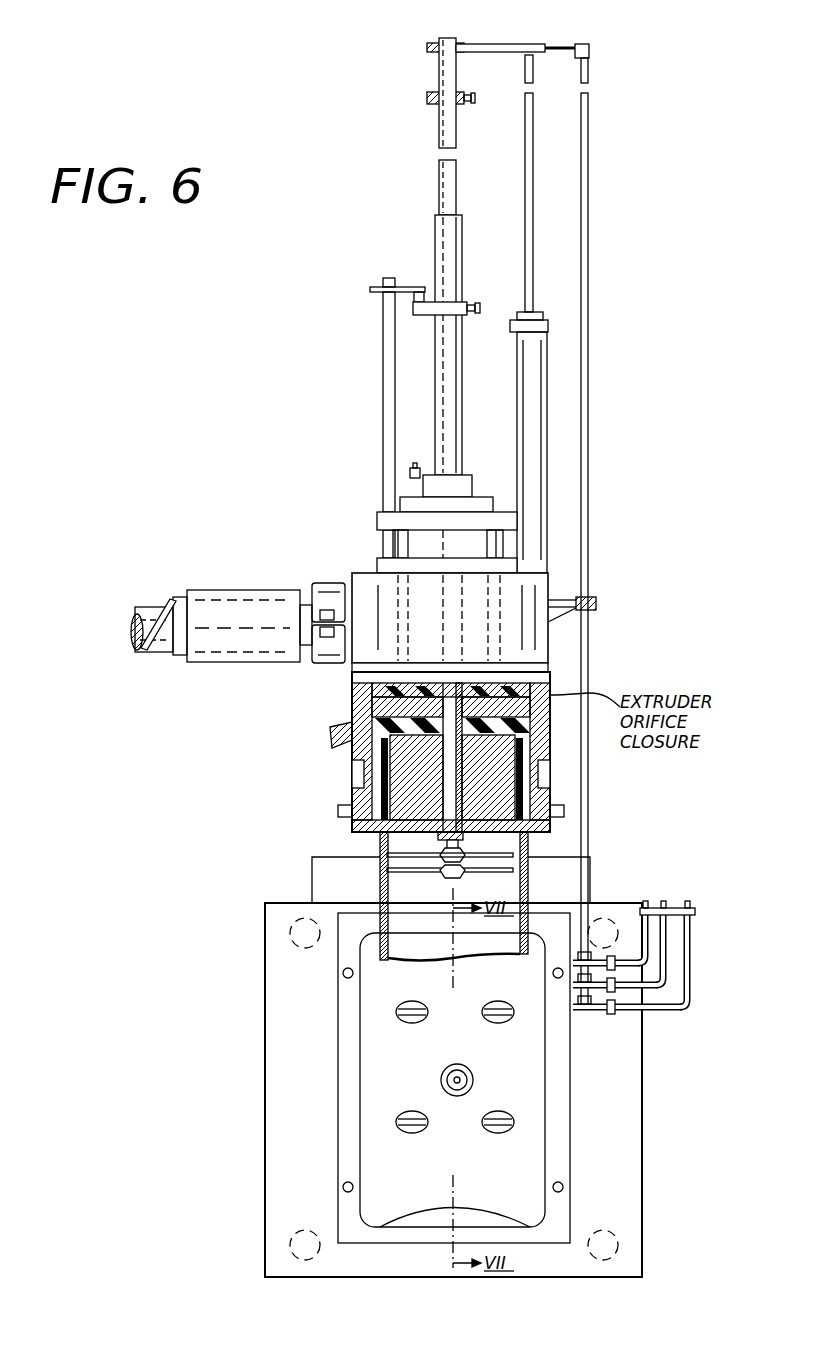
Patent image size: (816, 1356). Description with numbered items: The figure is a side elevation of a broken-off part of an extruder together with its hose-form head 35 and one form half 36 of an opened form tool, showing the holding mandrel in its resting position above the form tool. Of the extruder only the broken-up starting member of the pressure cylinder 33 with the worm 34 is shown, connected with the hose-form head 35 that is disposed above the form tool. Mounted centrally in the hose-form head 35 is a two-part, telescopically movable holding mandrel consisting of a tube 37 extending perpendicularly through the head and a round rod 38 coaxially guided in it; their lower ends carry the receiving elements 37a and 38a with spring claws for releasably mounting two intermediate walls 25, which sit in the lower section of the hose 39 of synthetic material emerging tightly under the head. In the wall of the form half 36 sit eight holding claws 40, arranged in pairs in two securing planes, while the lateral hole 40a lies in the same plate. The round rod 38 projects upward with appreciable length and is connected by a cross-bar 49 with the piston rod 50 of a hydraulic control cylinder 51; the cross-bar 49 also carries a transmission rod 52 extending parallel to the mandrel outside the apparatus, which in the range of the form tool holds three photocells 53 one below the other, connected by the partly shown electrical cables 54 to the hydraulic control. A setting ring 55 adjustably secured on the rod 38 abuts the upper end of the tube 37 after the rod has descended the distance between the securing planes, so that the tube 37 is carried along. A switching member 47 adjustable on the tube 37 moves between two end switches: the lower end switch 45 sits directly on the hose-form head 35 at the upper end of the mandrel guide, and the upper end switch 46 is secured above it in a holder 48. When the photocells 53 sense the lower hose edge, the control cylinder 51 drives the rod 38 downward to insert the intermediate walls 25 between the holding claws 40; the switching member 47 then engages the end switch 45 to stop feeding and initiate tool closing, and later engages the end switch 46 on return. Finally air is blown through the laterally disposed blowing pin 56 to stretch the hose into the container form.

The intermediate wall 25 is at (383, 870).
The pressure cylinder 33 is at (257, 612).
The worm 34 is at (160, 650).
The hose-form head 35 is at (352, 762).
The form half 36 is at (350, 1098).
The tube 37 is at (445, 423).
The receiving element 37a is at (440, 852).
The round rod 38 is at (447, 197).
The receiving element 38a is at (457, 877).
The hose 39 is at (380, 897).
The holding claw 40 is at (404, 1132).
The screw 40a is at (397, 1012).
The end switch 45 is at (415, 480).
The end switch 46 is at (412, 290).
The switching member 47 is at (427, 310).
The holder 48 is at (385, 390).
The cross-bar 49 is at (428, 48).
The piston rod 50 is at (527, 250).
The control cylinder 51 is at (533, 362).
The transmission rod 52 is at (588, 405).
The photocell 53 is at (600, 1012).
The electrical cable 54 is at (690, 985).
The setting ring 55 is at (428, 98).
The blowing pin 56 is at (475, 1080).